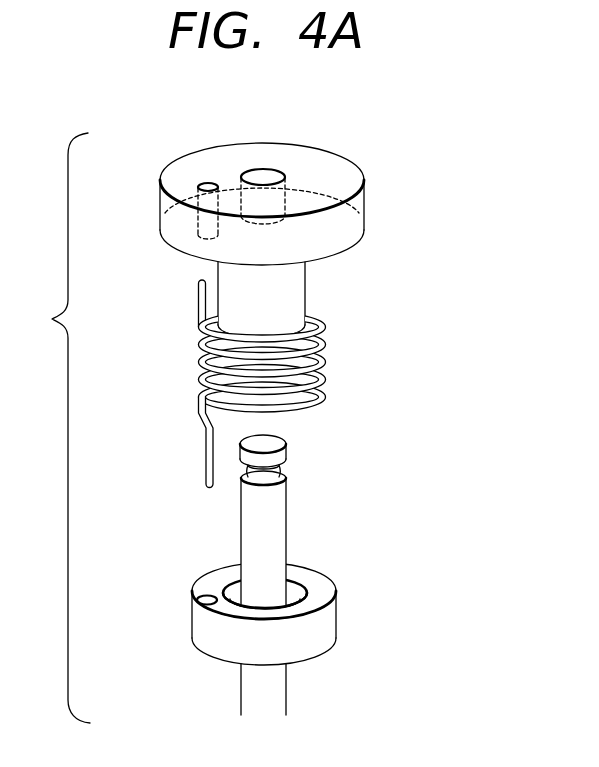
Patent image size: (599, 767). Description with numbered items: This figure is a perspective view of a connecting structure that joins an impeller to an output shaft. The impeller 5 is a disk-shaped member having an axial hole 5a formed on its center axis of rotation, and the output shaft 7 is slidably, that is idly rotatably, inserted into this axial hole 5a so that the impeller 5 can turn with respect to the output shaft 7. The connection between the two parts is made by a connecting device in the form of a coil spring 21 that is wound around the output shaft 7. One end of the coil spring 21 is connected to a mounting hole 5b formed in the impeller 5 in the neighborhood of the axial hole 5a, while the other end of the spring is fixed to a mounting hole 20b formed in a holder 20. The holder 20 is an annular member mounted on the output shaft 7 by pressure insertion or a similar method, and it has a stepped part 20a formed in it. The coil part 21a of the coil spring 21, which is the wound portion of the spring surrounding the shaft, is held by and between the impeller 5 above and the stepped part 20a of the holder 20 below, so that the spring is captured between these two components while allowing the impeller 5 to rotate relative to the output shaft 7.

The impeller 5 is at (327, 162).
The axial hole 5a is at (262, 176).
The mounting hole 5b is at (206, 184).
The coil spring 21 is at (338, 362).
The coil part 21a is at (197, 350).
The output shaft 7 is at (270, 512).
The holder 20 is at (273, 609).
The stepped part 20a is at (327, 585).
The mounting hole 20b is at (206, 597).